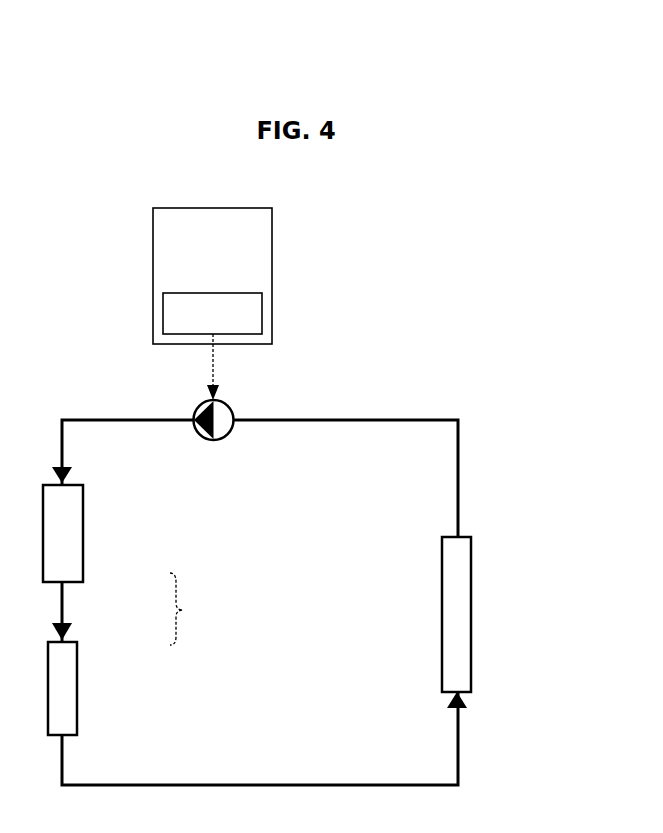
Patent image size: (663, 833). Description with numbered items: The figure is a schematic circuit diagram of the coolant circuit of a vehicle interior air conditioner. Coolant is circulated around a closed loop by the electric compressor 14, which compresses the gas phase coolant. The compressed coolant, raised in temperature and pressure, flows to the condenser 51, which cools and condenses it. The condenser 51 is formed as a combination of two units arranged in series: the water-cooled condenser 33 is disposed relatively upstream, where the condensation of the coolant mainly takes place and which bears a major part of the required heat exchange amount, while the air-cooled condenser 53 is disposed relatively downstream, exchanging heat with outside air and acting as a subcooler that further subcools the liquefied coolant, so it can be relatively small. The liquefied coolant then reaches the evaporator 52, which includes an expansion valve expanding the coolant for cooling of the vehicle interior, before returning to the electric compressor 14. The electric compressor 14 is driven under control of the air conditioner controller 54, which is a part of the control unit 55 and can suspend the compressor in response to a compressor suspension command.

The electric compressor 14 is at (223, 400).
The water-cooled condenser 33 is at (83, 563).
The condenser 51 is at (192, 609).
The evaporator 52 is at (471, 625).
The air-cooled condenser 53 is at (77, 655).
The air conditioner controller 54 is at (262, 313).
The control unit 55 is at (272, 250).